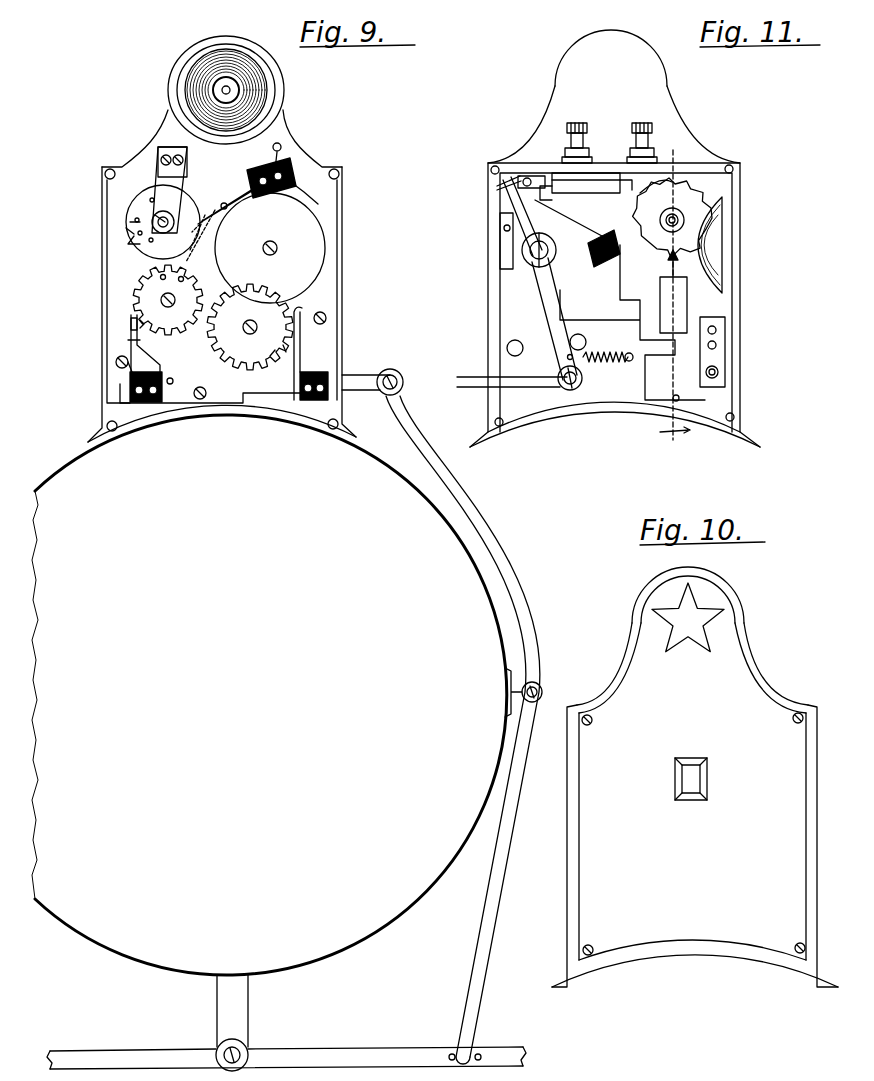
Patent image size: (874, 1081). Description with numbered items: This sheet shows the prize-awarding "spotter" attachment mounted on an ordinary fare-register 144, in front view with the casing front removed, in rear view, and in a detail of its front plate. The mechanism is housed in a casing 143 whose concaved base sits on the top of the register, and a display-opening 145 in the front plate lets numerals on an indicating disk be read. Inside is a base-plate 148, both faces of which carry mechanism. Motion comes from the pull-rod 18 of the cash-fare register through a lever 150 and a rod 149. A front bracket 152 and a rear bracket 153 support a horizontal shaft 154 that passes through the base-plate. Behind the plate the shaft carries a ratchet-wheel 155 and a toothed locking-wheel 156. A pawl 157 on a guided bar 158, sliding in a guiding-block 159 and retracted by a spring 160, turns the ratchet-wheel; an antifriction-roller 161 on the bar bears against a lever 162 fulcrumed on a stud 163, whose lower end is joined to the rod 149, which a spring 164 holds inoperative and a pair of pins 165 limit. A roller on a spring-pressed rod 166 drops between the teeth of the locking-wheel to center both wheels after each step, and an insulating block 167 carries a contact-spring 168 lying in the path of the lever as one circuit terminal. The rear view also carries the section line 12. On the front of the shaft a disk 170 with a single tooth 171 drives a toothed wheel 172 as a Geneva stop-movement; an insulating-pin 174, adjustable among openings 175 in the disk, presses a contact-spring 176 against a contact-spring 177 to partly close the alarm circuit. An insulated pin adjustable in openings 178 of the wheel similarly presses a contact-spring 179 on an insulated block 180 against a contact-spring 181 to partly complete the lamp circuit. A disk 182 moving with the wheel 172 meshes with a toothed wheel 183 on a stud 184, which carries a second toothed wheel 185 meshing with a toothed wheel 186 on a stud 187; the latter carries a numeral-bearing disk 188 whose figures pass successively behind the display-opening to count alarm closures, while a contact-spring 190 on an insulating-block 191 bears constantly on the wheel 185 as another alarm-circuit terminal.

In FIG. 9, the base-plate 148 is at (297, 153).
In FIG. 11, the base-plate 148 is at (503, 312).
In FIG. 9, the fare-register 144 is at (228, 458).
In FIG. 9, the bracket 152 is at (162, 178).
In FIG. 9, the shaft 154 is at (120, 206).
In FIG. 11, the shaft 154 is at (678, 222).
In FIG. 9, the openings 175 is at (132, 222).
In FIG. 9, the single tooth 171 is at (128, 230).
In FIG. 9, the disk 170 is at (135, 242).
In FIG. 9, the insulating-pin 174 is at (157, 239).
In FIG. 9, the contact-spring 176 is at (222, 208).
In FIG. 9, the contact-spring 177 is at (187, 250).
In FIG. 9, the disk 188 is at (296, 176).
In FIG. 9, the casing 143 is at (318, 204).
In FIG. 9, the toothed wheel 186 is at (322, 238).
In FIG. 9, the stud 187 is at (278, 248).
In FIG. 9, the stud 184 is at (260, 327).
In FIG. 9, the second toothed wheel 185 is at (283, 345).
In FIG. 9, the toothed wheel 183 is at (270, 356).
In FIG. 9, the toothed wheel 172 is at (162, 292).
In FIG. 9, the openings 178 is at (132, 282).
In FIG. 9, the contact-spring 179 is at (150, 355).
In FIG. 9, the disk 182 is at (128, 340).
In FIG. 9, the contact-spring 181 is at (128, 365).
In FIG. 9, the insulated block 180 is at (148, 403).
In FIG. 9, the contact-spring 190 is at (298, 335).
In FIG. 9, the insulating-block 191 is at (318, 402).
In FIG. 9, the rod 149 is at (356, 376).
In FIG. 11, the rod 149 is at (465, 377).
In FIG. 9, the lever 150 is at (506, 560).
In FIG. 9, the pull rod 18 is at (408, 1032).
In FIG. 11, the pawl 157 is at (645, 148).
In FIG. 11, the guided bar 158 is at (620, 178).
In FIG. 11, the guiding-block 159 is at (600, 190).
In FIG. 11, the spring 160 is at (580, 186).
In FIG. 11, the antifriction-roller 161 is at (524, 177).
In FIG. 11, the contact-spring 168 is at (500, 184).
In FIG. 11, the lever 162 is at (515, 208).
In FIG. 11, the stud 163 is at (524, 252).
In FIG. 11, the block 167 is at (600, 265).
In FIG. 11, the spring 164 is at (572, 391).
In FIG. 11, the pins 165 is at (570, 342).
In FIG. 11, the toothed locking-wheel 156 is at (690, 185).
In FIG. 11, the ratchet-wheel 155 is at (660, 200).
In FIG. 11, the section line 12 is at (685, 158).
In FIG. 11, the bracket 153 is at (710, 238).
In FIG. 11, the spring-pressed rod 166 is at (690, 320).
In FIG. 10, the display-opening 145 is at (720, 779).